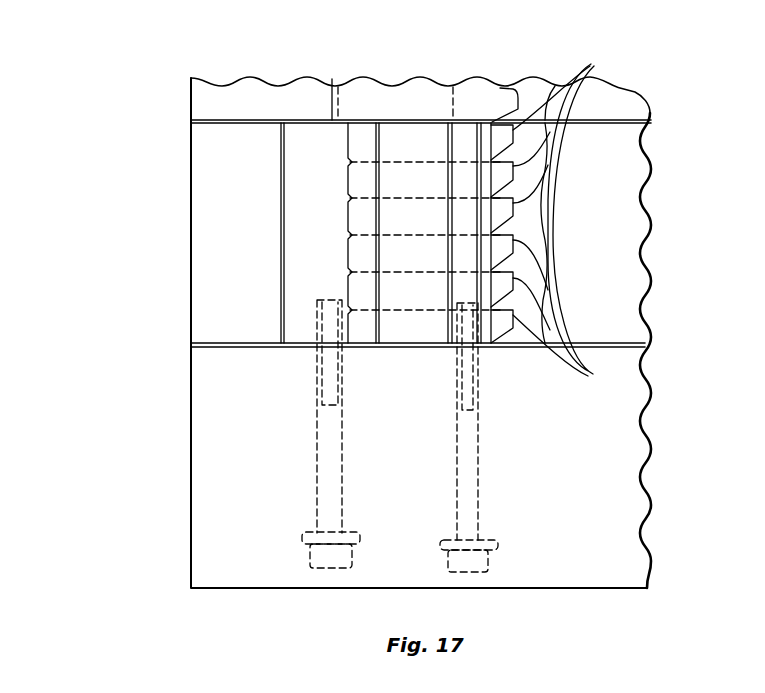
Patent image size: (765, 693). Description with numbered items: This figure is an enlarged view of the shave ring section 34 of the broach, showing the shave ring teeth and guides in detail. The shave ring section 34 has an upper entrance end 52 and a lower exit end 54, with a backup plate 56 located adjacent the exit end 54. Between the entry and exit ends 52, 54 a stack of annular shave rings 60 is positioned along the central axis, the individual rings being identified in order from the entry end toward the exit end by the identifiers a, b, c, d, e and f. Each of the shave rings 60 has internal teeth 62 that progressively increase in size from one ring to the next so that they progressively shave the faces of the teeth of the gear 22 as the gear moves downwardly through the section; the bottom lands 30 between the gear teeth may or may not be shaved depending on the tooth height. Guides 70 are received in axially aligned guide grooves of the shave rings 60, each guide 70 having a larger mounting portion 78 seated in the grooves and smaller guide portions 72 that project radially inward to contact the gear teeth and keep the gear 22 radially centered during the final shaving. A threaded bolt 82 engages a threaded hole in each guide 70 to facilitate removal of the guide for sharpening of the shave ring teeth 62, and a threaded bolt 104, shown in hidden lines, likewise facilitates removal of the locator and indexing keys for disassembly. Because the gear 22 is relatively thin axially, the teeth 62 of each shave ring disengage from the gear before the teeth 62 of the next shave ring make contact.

The inner extremities 30 is at (142, 72).
The upper entrance end 52 is at (172, 138).
The lower exit end 54 is at (178, 332).
The shave ring section 34 is at (178, 236).
The backup plate 56 is at (215, 422).
The shave rings 60 is at (408, 187).
The internal teeth 62 is at (566, 220).
The gear 22 is at (545, 200).
The guide portions 72 is at (497, 237).
The guides 70 is at (440, 219).
The mounting portion 78 is at (462, 270).
The threaded bolt 82 is at (478, 468).
The threaded bolt 104 is at (317, 488).
The shave ring identifier a is at (347, 142).
The shave ring identifier b is at (347, 180).
The shave ring identifier c is at (347, 217).
The shave ring identifier d is at (347, 255).
The shave ring identifier e is at (347, 292).
The shave ring identifier f is at (347, 328).